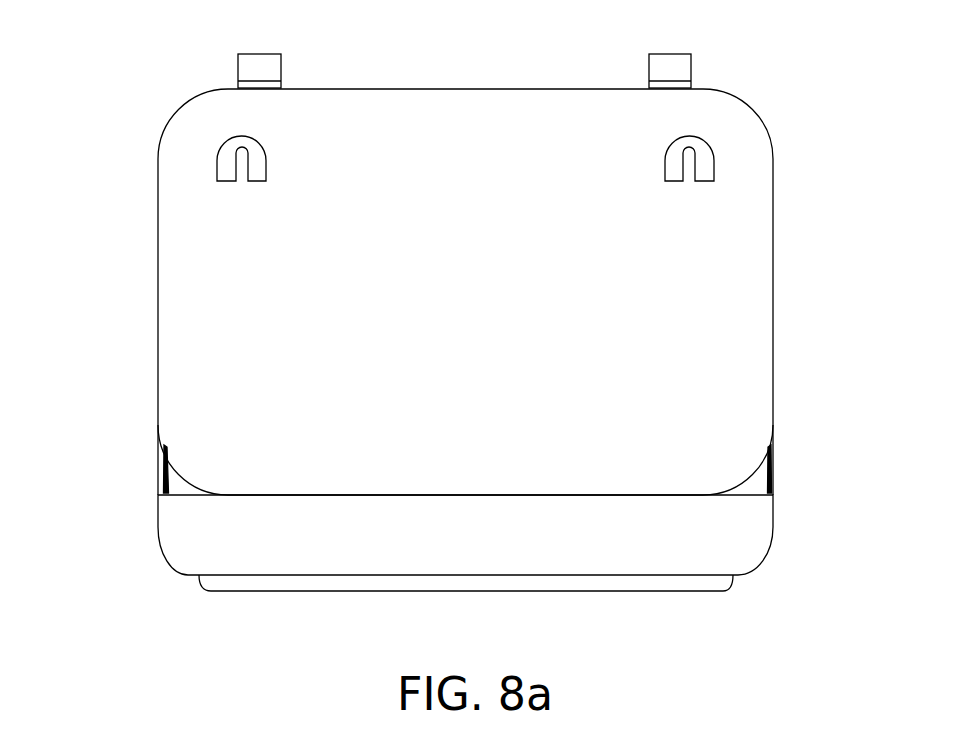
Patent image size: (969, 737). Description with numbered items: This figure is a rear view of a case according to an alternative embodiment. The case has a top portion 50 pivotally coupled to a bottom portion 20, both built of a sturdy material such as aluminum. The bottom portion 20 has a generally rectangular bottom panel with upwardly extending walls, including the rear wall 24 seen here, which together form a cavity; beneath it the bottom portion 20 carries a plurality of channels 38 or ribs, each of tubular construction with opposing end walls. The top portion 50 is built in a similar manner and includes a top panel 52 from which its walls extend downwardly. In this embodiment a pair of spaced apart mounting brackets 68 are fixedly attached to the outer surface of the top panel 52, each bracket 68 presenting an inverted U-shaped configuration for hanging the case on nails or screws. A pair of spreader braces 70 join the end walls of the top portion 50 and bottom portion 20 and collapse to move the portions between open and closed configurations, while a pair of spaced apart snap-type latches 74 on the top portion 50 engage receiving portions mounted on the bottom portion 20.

The bottom portion 20 is at (481, 585).
The rear wall 24 is at (170, 527).
The channel 38 is at (240, 592).
The top portion 50 is at (789, 232).
The top panel 52 is at (497, 309).
The mounting bracket 68 is at (267, 166).
The spreader brace 70 is at (163, 468).
The snap-type latch 74 is at (238, 65).